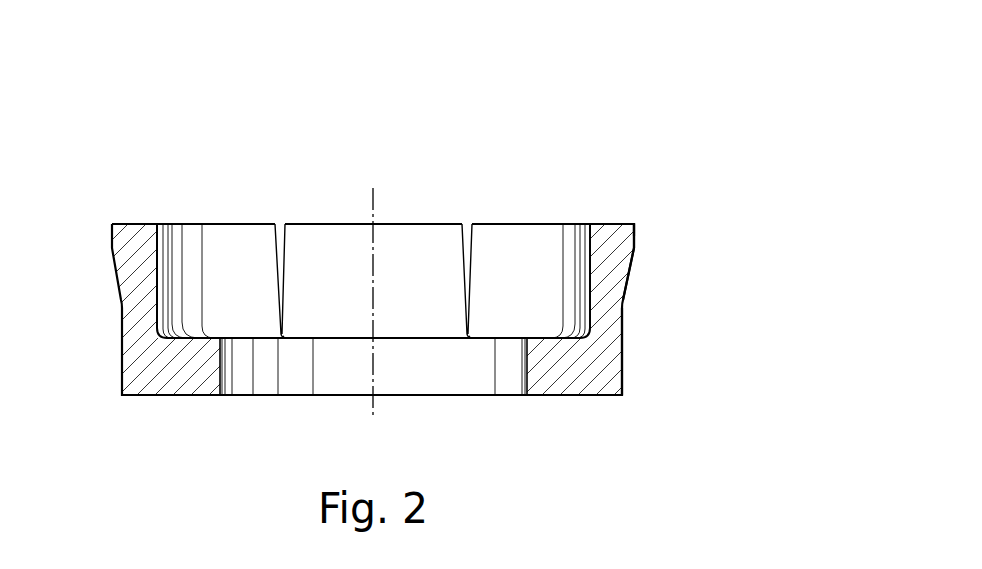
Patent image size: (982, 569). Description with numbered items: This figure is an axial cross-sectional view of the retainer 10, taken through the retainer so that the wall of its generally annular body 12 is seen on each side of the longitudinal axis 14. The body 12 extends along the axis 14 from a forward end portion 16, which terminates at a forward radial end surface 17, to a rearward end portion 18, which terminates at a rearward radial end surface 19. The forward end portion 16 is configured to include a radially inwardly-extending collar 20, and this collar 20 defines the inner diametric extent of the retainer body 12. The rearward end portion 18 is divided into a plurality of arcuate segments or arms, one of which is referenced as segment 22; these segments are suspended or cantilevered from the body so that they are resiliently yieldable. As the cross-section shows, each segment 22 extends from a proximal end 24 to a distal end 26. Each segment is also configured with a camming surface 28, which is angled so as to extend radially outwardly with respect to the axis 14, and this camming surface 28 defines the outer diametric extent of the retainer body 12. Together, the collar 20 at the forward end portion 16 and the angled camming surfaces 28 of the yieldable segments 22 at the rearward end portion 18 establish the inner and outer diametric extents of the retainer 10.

The retainer 10 is at (689, 93).
The annular body 12 is at (122, 333).
The longitudinal axis 14 is at (375, 198).
The forward end portion 16 is at (622, 396).
The forward radial end surface 17 is at (586, 396).
The rearward end portion 18 is at (635, 236).
The rearward radial end surface 19 is at (606, 223).
The collar 20 is at (522, 378).
The arcuate segment 22 is at (722, 227).
The proximal end 24 is at (622, 356).
The distal end 26 is at (637, 224).
The camming surface 28 is at (628, 282).